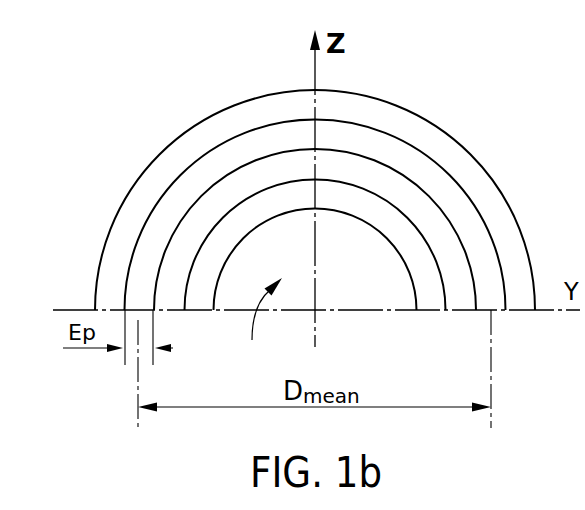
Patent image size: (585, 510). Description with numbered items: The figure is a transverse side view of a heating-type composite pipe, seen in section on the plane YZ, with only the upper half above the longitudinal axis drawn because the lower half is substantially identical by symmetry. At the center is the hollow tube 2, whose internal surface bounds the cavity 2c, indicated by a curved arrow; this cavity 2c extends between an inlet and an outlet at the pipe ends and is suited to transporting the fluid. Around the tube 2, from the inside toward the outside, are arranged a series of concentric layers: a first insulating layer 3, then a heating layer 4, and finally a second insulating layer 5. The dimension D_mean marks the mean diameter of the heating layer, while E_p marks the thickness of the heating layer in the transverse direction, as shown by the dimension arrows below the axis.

The hollow tube 2 is at (210, 262).
The first insulating layer 3 is at (197, 222).
The heating layer 4 is at (197, 177).
The second insulating layer 5 is at (212, 132).
The cavity 2c is at (262, 326).